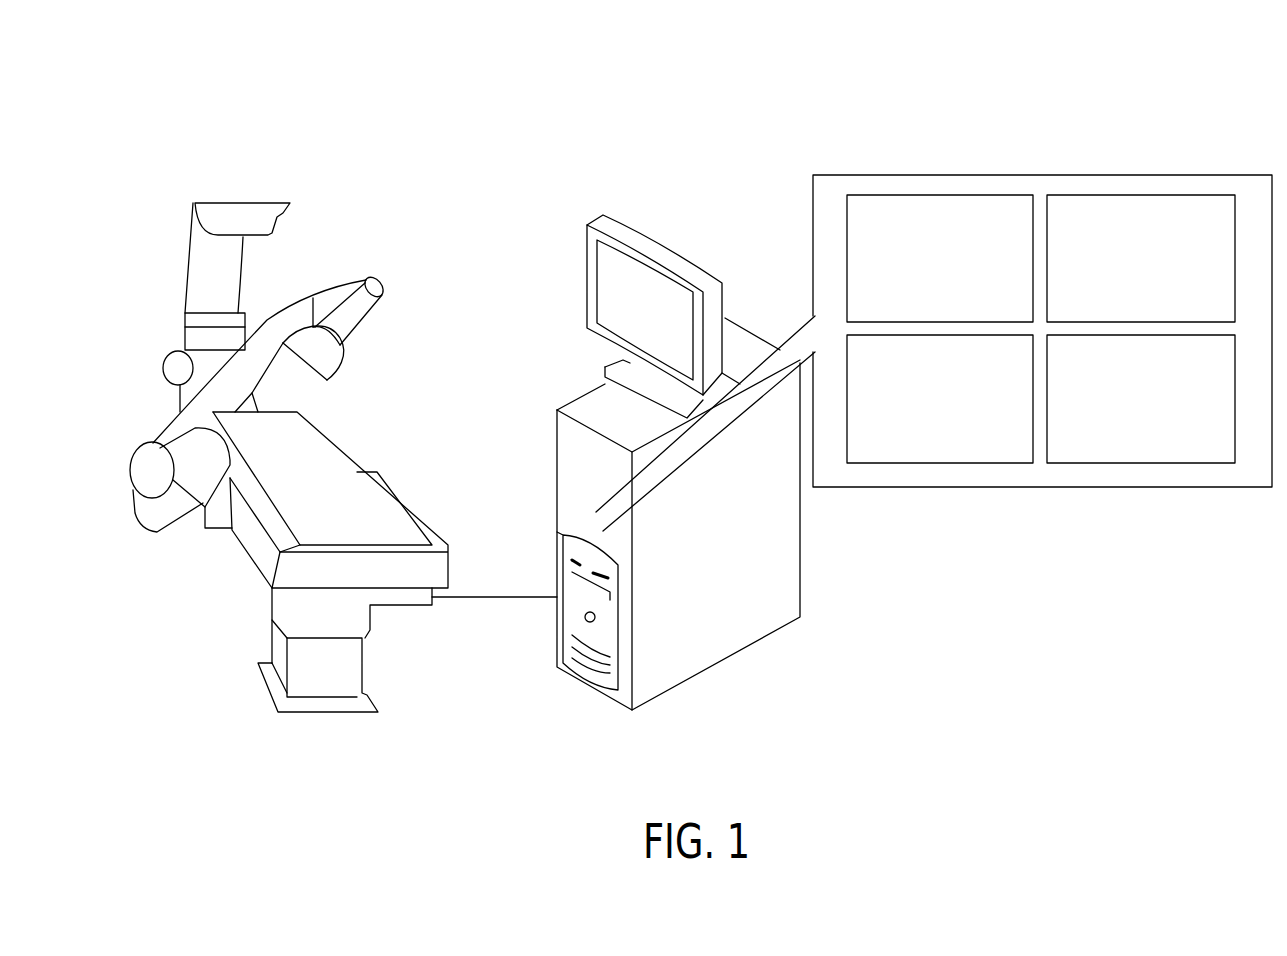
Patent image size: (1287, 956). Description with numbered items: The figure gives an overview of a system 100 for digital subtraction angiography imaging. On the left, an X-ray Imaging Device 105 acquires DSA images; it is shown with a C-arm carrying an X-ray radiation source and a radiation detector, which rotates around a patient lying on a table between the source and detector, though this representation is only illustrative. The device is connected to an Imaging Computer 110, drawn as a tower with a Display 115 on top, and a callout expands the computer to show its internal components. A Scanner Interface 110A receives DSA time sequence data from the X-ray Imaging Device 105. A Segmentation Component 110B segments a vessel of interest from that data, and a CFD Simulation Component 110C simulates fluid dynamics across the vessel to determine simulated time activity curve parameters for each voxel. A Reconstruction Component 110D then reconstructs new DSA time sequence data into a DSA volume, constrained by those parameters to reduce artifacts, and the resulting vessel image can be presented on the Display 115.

The system 100 is at (341, 101).
The X-ray Imaging Device 105 is at (183, 277).
The Imaging Computer 110 is at (557, 532).
The Scanner Interface 110A is at (900, 195).
The Segmentation Component 110B is at (1107, 195).
The CFD Simulation Component 110C is at (902, 463).
The Reconstruction Component 110D is at (1107, 463).
The Display 115 is at (587, 223).